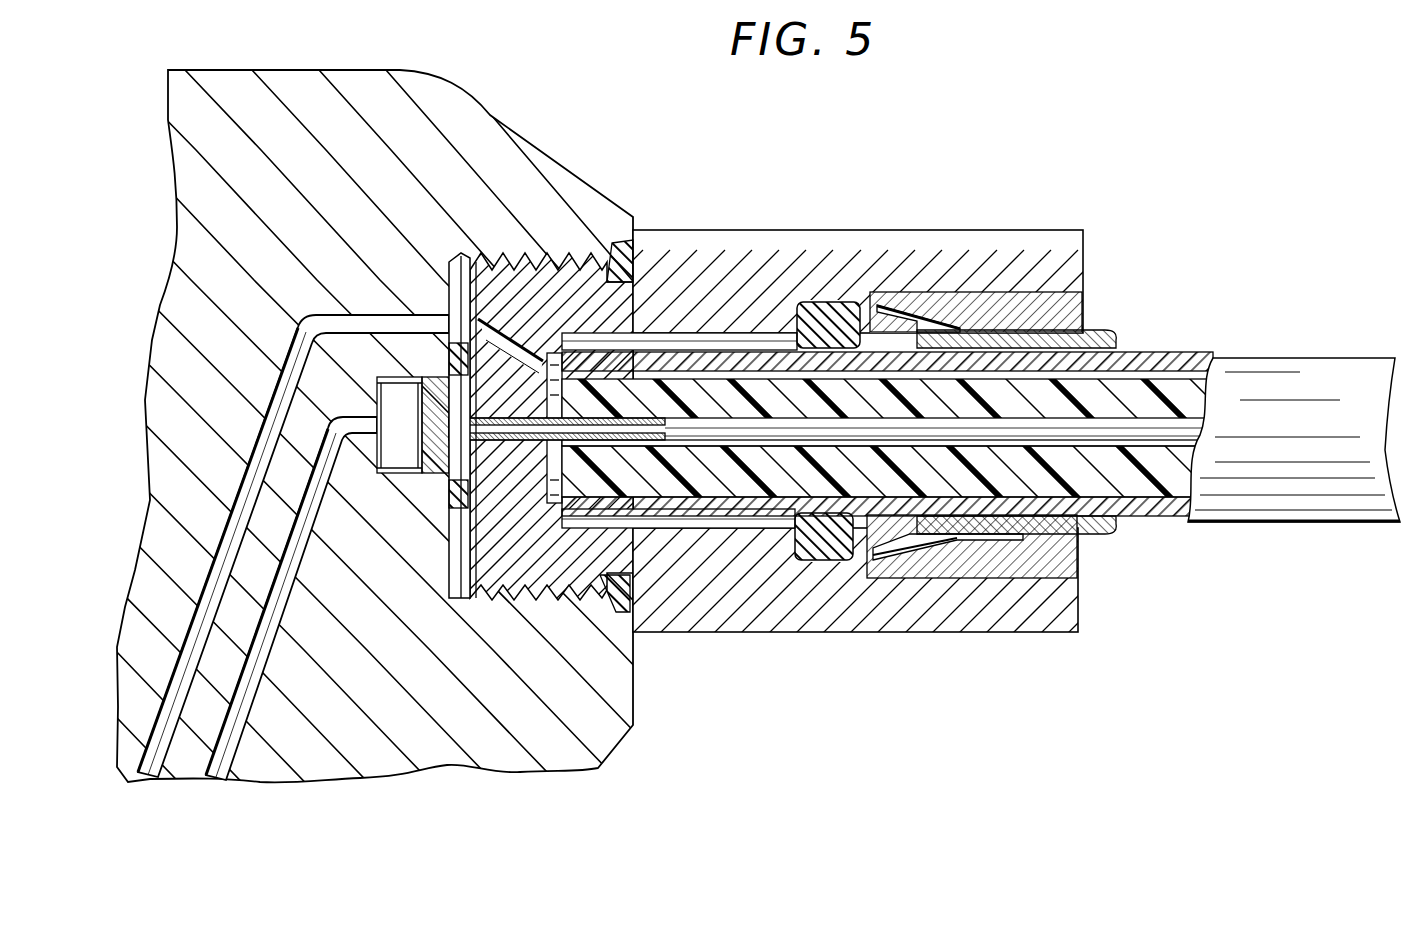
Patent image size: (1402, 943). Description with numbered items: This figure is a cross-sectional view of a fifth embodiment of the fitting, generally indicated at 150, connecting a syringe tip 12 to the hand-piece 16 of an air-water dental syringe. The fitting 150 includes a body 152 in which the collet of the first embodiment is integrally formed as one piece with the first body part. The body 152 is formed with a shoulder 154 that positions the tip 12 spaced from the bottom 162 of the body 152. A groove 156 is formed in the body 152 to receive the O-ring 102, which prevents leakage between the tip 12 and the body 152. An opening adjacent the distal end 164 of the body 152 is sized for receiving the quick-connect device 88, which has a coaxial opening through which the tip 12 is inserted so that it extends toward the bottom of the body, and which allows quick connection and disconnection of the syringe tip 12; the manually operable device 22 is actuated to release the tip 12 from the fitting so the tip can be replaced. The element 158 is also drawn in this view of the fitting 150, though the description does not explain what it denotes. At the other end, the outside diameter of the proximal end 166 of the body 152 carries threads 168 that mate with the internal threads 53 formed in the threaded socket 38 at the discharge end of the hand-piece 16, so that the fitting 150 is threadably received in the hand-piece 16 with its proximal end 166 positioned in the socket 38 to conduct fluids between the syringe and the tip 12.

The syringe tip 12 is at (1262, 392).
The hand-piece 16 is at (318, 108).
The manually operable device 22 is at (1113, 533).
The threaded socket 38 is at (483, 598).
The internal threads 53 is at (495, 255).
The quick-connect device 88 is at (1083, 307).
The O-ring 102 is at (855, 300).
The fitting 150 is at (751, 486).
The body 152 is at (770, 248).
The shoulder 154 is at (660, 243).
The groove 156 is at (830, 545).
The collet 158 is at (965, 285).
The bottom 162 is at (560, 470).
The distal end 164 is at (1058, 615).
The proximal end 166 is at (555, 285).
The threads 168 is at (547, 597).